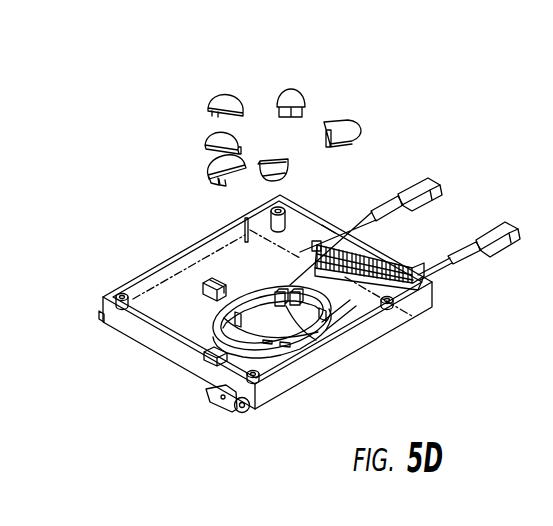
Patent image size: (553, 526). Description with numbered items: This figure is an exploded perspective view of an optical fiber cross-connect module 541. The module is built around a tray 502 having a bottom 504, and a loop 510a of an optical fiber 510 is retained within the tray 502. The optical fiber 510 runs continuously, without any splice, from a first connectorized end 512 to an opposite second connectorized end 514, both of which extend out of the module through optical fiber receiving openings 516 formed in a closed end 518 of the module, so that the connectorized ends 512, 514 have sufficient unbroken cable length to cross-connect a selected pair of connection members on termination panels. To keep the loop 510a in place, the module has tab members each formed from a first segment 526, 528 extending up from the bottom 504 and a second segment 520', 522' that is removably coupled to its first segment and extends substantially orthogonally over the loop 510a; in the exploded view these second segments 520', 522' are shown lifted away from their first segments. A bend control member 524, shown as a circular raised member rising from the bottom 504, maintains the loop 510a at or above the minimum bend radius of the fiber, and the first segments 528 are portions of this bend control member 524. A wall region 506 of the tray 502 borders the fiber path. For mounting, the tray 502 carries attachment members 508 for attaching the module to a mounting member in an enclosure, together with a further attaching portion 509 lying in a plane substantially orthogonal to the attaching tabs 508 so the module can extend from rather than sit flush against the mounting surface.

The tray 502 is at (208, 274).
The bottom 504 is at (178, 328).
The tray wall 506 is at (332, 220).
The attachment members 508 is at (213, 402).
The attaching portion 509 is at (249, 411).
The optical fiber 510 is at (363, 217).
The loop 510a is at (270, 366).
The first connectorized end 512 is at (443, 180).
The second connectorized end 514 is at (495, 247).
The optical fiber receiving openings 516 is at (427, 275).
The closed end 518 is at (423, 326).
The second segment 520' is at (178, 133).
The second segment 522' is at (300, 117).
The bend control member 524 is at (232, 318).
The first segment 526 is at (202, 278).
The first segment 528 is at (240, 340).
The cross-connect module 541 is at (447, 96).